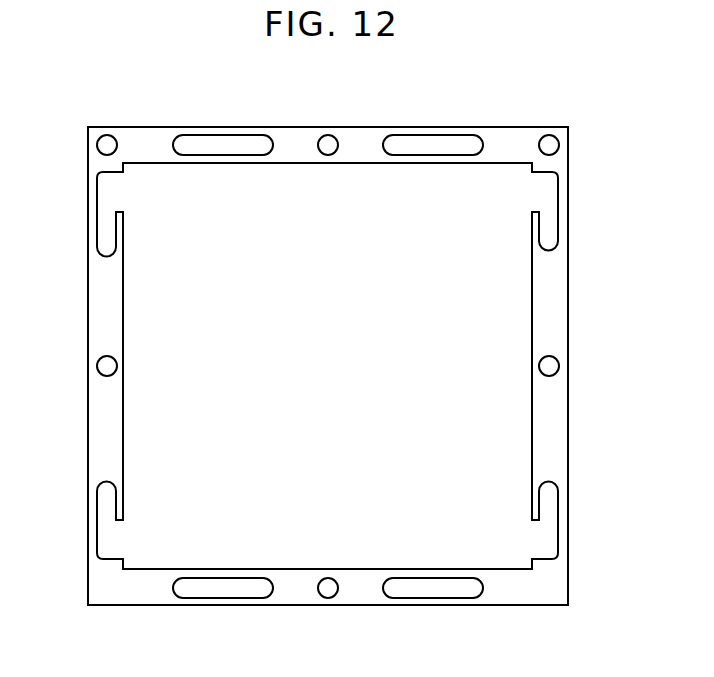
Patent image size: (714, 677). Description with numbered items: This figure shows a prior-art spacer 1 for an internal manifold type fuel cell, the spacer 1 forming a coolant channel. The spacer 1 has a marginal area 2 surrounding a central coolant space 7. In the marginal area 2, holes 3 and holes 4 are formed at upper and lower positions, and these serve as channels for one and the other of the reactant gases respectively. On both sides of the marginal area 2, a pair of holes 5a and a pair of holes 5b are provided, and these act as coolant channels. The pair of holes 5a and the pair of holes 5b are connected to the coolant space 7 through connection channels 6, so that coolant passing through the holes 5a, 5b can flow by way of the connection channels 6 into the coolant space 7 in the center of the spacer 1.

The holding frame 1 is at (500, 78).
The frame plate 2 is at (550, 321).
The first slot 3 is at (222, 148).
The second slot 4 is at (427, 148).
The upper hook portion 5a is at (106, 227).
The lower hook portion 5b is at (106, 505).
The corner notch 6 is at (122, 192).
The opening 7 is at (152, 337).